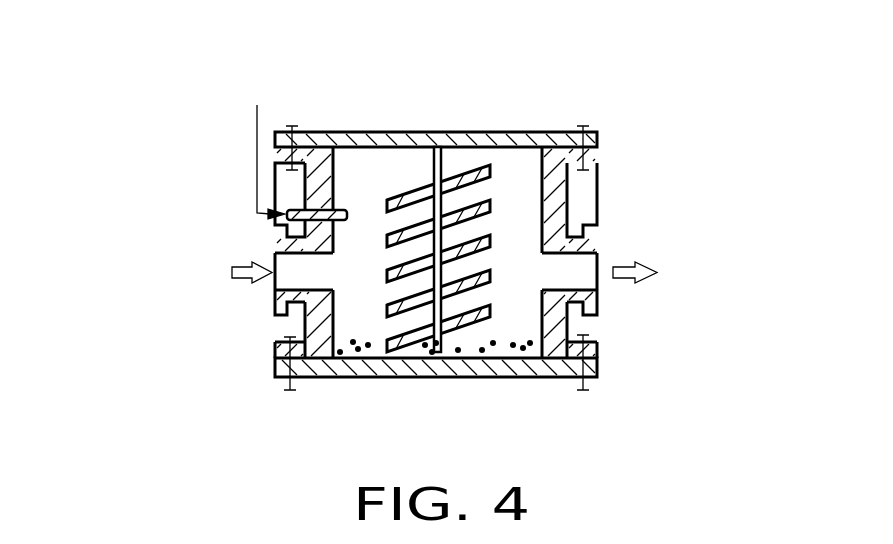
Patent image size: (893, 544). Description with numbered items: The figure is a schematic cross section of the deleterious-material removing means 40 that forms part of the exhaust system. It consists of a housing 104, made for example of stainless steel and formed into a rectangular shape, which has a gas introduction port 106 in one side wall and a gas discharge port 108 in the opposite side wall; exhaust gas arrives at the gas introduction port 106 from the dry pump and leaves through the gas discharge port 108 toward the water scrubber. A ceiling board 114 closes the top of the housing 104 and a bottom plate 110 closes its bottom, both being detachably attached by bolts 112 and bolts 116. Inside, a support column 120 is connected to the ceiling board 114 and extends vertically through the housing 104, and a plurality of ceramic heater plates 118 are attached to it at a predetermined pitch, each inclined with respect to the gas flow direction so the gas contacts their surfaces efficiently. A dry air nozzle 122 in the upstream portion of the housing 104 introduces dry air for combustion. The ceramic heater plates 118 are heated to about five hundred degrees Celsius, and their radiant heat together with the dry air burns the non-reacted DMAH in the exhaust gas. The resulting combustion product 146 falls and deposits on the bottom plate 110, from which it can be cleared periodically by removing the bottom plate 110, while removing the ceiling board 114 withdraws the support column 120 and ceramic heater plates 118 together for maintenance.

The deleterious-material removing means 40 is at (571, 42).
The housing 104 is at (567, 204).
The gas introduction port 106 is at (273, 280).
The gas discharge port 108 is at (580, 278).
The bottom plate 110 is at (437, 367).
The bolts 112 is at (283, 397).
The ceiling board 114 is at (480, 140).
The bolts 116 is at (587, 126).
The ceramic heater plates 118 is at (472, 340).
The support column 120 is at (433, 173).
The dry air nozzle 122 is at (285, 214).
The combustion product 146 is at (342, 358).